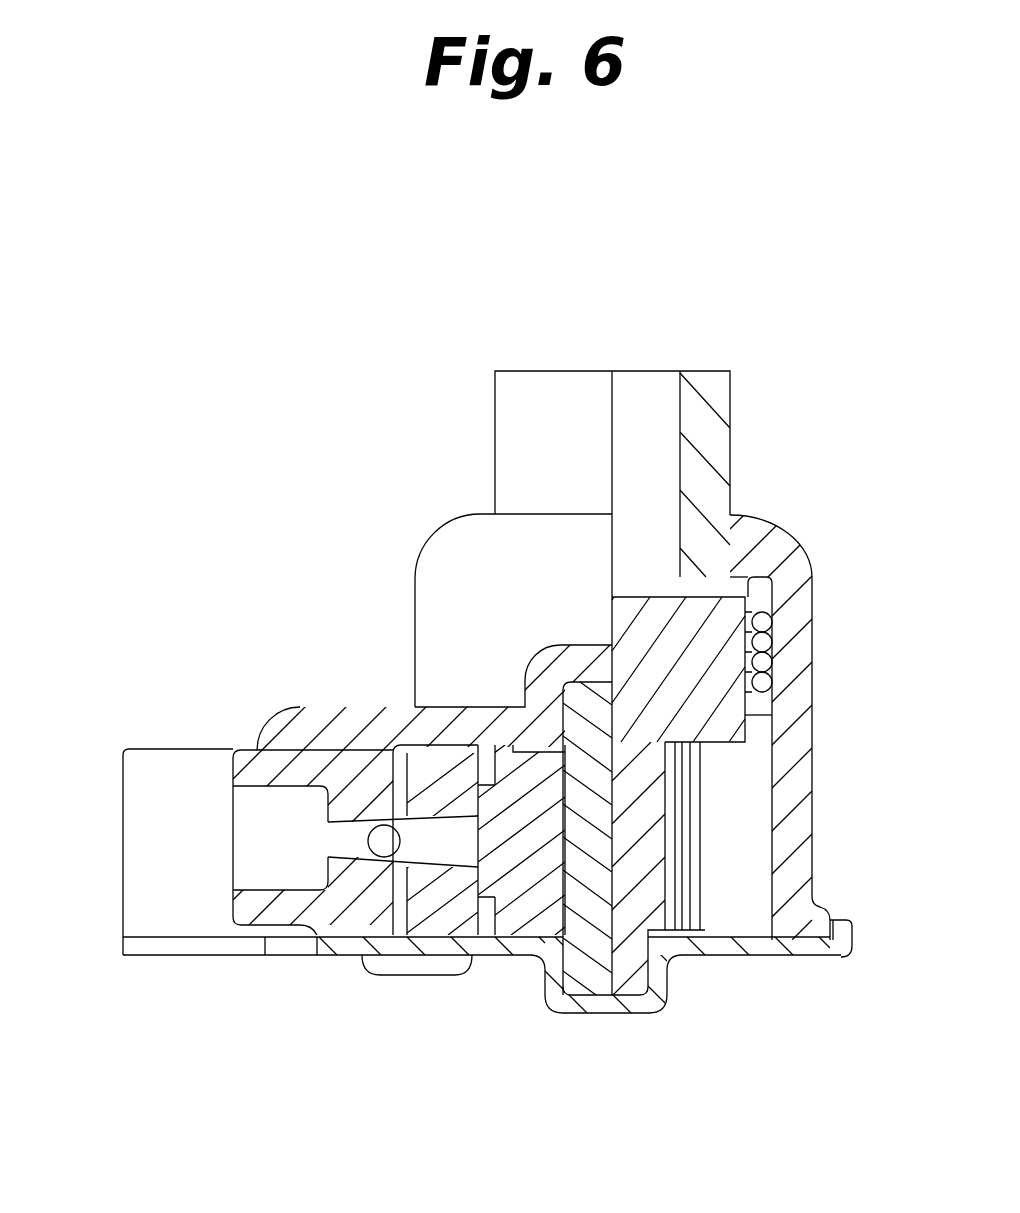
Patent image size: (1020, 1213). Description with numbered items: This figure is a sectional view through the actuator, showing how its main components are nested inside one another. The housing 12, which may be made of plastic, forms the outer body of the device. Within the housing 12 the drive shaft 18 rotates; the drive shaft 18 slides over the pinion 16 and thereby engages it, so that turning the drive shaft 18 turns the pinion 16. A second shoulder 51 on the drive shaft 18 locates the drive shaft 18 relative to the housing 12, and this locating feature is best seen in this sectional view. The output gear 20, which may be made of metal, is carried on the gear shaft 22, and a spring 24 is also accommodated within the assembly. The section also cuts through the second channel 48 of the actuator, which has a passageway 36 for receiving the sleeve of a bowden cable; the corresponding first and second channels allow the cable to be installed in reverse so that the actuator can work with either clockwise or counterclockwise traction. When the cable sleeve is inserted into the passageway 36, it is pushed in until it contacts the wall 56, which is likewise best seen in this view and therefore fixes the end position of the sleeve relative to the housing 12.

The housing 12 is at (806, 558).
The pinion 16 is at (790, 715).
The drive shaft 18 is at (735, 424).
The output gear 20 is at (422, 777).
The gear shaft 22 is at (562, 937).
The spring 24 is at (772, 630).
The passageway 36 is at (250, 870).
The second channel 48 is at (260, 930).
The second shoulder 51 is at (742, 577).
The wall 56 is at (318, 800).